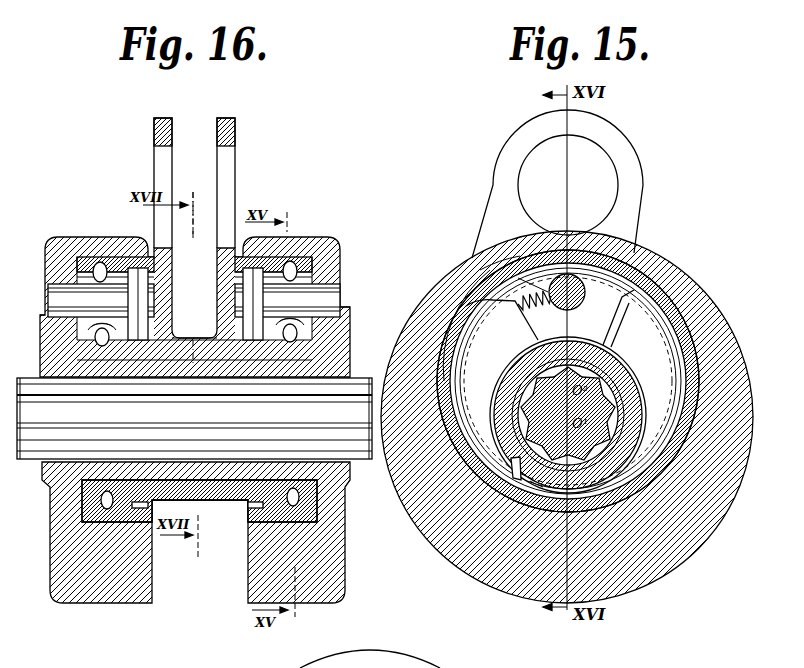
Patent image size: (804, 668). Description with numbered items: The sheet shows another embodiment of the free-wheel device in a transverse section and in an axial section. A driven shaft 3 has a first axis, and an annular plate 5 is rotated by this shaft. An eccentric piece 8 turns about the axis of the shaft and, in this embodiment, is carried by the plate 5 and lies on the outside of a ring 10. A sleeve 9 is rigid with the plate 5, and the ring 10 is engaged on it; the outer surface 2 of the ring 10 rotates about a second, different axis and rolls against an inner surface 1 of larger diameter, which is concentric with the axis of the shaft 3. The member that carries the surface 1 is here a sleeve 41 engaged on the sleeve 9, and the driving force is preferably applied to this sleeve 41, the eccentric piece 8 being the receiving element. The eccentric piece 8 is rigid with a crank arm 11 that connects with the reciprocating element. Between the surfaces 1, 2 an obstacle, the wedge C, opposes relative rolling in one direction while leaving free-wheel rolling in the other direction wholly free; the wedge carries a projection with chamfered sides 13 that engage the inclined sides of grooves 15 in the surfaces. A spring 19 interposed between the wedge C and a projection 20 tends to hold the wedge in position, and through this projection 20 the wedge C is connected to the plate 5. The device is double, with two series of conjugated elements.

In FIG. 15, the inner surface 1 is at (631, 378).
In FIG. 16, the inner surface 1 is at (273, 337).
In FIG. 15, the outer surface 2 is at (661, 325).
In FIG. 16, the outer surface 2 is at (87, 270).
In FIG. 15, the driven shaft 3 is at (543, 487).
In FIG. 16, the driven shaft 3 is at (32, 380).
In FIG. 15, the sleeve 41 is at (518, 463).
In FIG. 16, the sleeve 41 is at (195, 343).
In FIG. 16, the plate 5 is at (47, 330).
In FIG. 15, the eccentric piece 8 is at (708, 507).
In FIG. 16, the eccentric piece 8 is at (68, 237).
In FIG. 15, the sleeve 9 is at (520, 392).
In FIG. 16, the sleeve 9 is at (232, 467).
In FIG. 15, the ring 10 is at (682, 297).
In FIG. 16, the ring 10 is at (118, 257).
In FIG. 15, the crank arm 11 is at (638, 200).
In FIG. 16, the crank arm 11 is at (203, 258).
In FIG. 15, the chamfered side 13 is at (455, 377).
In FIG. 15, the groove 15 is at (627, 289).
In FIG. 16, the groove 15 is at (287, 262).
In FIG. 15, the spring 19 is at (500, 265).
In FIG. 16, the spring 19 is at (338, 298).
In FIG. 15, the projection 20 is at (585, 291).
In FIG. 16, the projection 20 is at (340, 283).
In FIG. 15, the wedge C is at (453, 310).